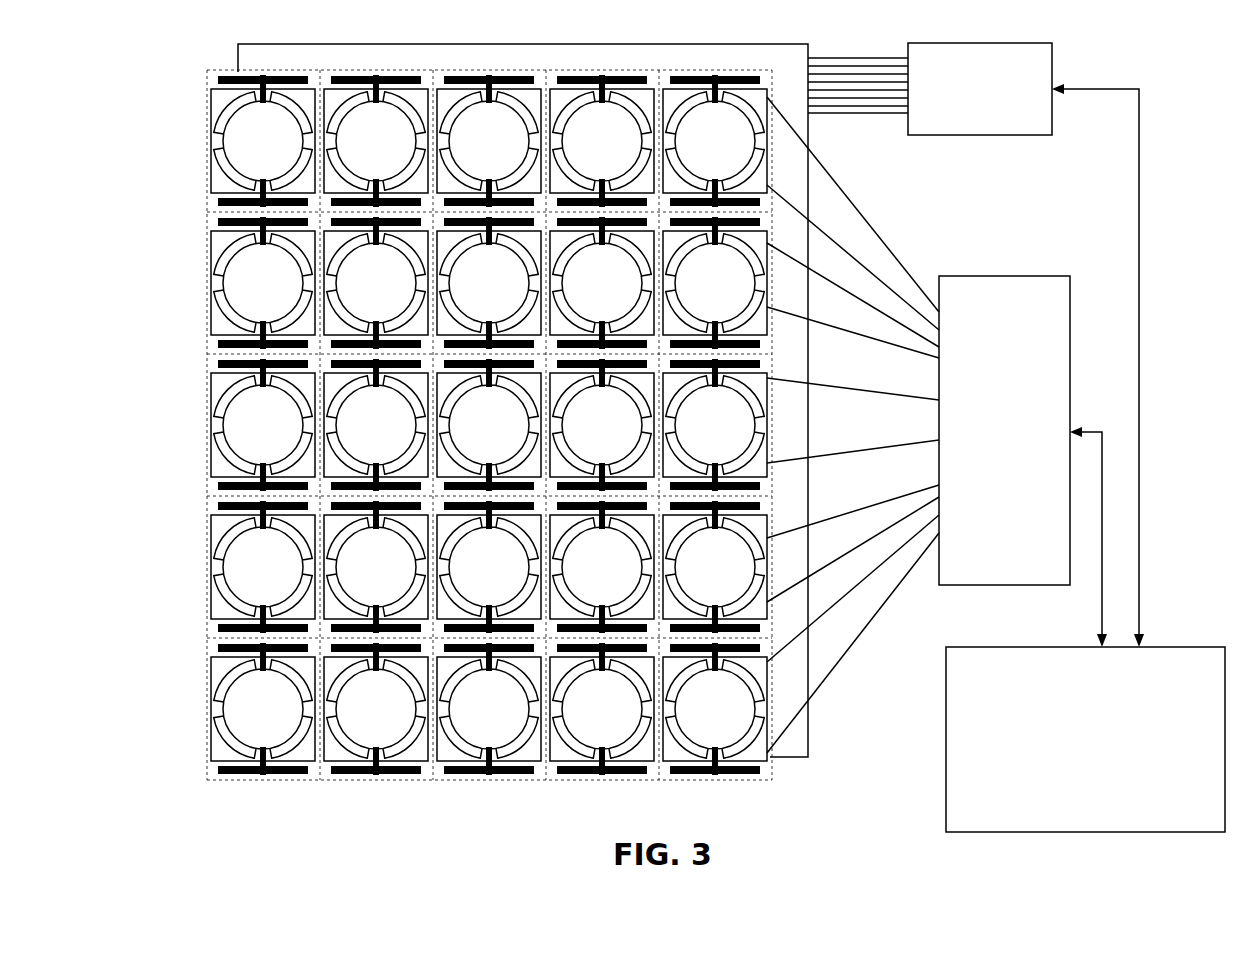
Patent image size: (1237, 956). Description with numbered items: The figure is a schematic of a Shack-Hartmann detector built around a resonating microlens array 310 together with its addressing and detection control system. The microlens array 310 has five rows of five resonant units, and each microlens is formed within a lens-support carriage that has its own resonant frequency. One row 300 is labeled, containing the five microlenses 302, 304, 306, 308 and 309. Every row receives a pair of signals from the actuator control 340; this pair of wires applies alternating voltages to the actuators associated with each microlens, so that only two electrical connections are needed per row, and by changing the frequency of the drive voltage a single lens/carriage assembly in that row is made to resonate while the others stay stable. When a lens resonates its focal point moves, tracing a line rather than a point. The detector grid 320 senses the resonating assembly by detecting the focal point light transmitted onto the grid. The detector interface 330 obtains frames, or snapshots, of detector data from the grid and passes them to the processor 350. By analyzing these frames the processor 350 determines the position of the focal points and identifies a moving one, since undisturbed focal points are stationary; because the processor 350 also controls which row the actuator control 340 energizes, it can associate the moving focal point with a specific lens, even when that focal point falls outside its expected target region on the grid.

The row 300 is at (172, 279).
The microlens array 310 is at (207, 110).
The microlens 302 is at (246, 294).
The microlens 304 is at (359, 294).
The microlens 306 is at (472, 294).
The microlens 308 is at (585, 294).
The microlens 309 is at (698, 294).
The detector grid 320 is at (793, 43).
The detector interface 330 is at (964, 124).
The actuator control 340 is at (989, 466).
The processor 350 is at (1069, 762).